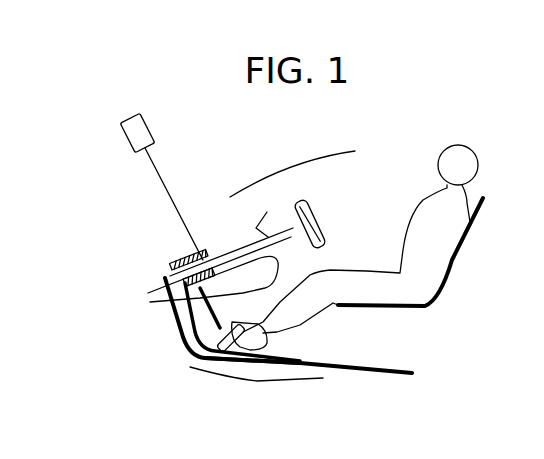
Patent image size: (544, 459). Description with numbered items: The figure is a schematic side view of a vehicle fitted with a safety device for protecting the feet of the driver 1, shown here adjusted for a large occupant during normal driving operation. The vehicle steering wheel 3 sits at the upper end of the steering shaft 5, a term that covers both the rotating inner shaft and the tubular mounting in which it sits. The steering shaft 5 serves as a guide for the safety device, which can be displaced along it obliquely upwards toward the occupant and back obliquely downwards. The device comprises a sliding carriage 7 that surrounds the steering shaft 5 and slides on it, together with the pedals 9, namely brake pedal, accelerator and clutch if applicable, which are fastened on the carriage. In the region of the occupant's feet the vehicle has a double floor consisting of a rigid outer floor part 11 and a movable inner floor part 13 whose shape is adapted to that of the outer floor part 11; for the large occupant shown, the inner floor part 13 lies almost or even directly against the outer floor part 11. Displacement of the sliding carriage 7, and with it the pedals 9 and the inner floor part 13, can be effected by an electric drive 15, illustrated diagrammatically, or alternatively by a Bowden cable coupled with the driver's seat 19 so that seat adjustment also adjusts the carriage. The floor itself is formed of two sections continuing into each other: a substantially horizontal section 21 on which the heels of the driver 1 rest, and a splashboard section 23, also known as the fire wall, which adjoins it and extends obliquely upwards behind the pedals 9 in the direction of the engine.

The driver 1 is at (452, 158).
The vehicle steering wheel 3 is at (317, 227).
The steering shaft 5 is at (237, 257).
The sliding carriage 7 is at (175, 266).
The pedals 9 is at (165, 312).
The rigid outer floor part 11 is at (219, 362).
The movable inner floor part 13 is at (322, 360).
The electric drive 15 is at (147, 136).
The driver's seat 19 is at (482, 207).
The horizontal section 21 is at (257, 382).
The splashboard section 23 is at (190, 367).